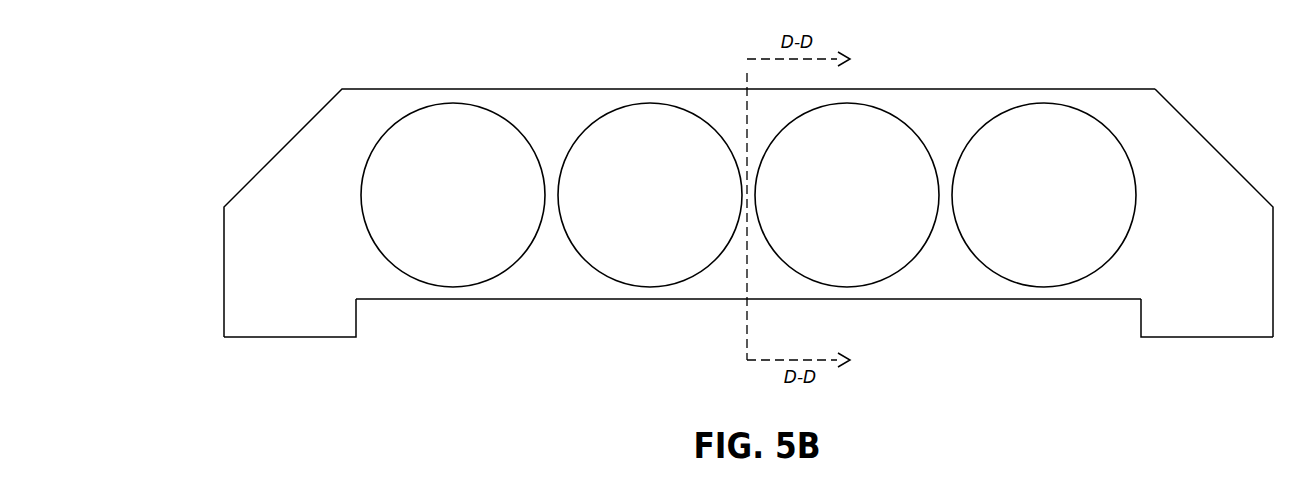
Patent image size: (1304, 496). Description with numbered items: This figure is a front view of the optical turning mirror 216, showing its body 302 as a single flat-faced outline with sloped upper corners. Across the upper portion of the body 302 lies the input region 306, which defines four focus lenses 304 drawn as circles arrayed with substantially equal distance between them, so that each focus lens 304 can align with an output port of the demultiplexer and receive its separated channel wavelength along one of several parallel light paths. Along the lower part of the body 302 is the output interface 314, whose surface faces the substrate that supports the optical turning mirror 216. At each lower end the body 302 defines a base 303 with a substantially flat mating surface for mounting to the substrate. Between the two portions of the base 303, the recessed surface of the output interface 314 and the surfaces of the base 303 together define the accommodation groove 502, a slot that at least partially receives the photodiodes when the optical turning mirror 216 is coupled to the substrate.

The optical turning mirror 216 is at (364, 51).
The body 302 is at (302, 157).
The base 303 is at (300, 338).
The focus lenses 304 is at (748, 195).
The input region 306 is at (1214, 213).
The output interface 314 is at (490, 300).
The accommodation groove 502 is at (603, 335).